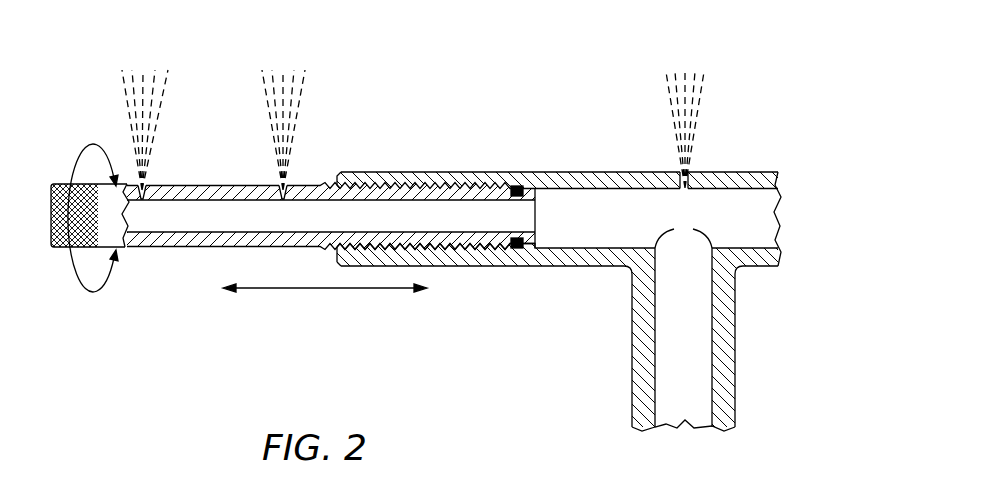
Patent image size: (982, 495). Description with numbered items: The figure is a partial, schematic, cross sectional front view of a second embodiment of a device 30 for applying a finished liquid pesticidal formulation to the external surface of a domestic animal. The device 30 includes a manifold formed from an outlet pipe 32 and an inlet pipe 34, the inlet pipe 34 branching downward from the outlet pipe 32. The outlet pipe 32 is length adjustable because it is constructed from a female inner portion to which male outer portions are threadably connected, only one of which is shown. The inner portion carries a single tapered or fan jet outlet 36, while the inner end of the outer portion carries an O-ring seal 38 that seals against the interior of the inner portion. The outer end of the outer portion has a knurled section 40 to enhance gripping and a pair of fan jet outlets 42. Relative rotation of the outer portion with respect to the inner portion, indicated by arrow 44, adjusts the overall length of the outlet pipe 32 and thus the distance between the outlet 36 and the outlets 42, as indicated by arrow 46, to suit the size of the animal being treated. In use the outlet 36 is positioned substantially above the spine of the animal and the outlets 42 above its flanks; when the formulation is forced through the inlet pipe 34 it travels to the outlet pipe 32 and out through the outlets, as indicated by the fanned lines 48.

The device 30 is at (505, 131).
The outlet pipe 32 is at (605, 178).
The inlet pipe 34 is at (638, 365).
The fan jet outlet 36 is at (690, 186).
The O-ring seal 38 is at (520, 195).
The knurled section 40 is at (62, 249).
The fan jet outlets 42 is at (278, 183).
The arrow 44 is at (80, 160).
The arrow 46 is at (333, 291).
The fanned lines 48 is at (285, 85).